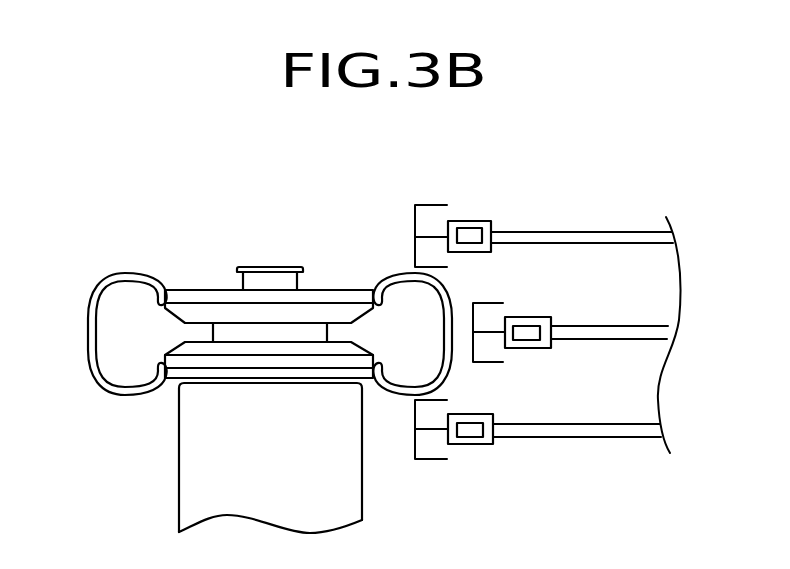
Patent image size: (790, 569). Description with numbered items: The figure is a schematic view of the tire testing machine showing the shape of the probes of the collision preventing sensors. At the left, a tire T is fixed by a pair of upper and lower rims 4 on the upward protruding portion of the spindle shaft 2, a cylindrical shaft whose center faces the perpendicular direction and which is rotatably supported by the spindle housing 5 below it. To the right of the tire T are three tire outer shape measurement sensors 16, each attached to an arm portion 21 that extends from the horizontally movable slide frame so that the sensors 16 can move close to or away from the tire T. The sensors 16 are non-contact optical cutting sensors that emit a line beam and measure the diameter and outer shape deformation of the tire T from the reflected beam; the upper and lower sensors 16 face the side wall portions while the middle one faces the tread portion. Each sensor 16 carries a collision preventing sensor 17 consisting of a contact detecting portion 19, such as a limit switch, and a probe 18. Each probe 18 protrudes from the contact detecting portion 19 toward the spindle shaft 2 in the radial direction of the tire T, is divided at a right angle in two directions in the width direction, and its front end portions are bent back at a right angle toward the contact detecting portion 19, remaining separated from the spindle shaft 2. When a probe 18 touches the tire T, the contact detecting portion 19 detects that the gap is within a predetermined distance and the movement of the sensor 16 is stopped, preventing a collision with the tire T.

The spindle shaft 2 is at (278, 227).
The tire T is at (127, 273).
The upper and lower rims 4 is at (206, 288).
The spindle housing 5 is at (178, 478).
The tire outer shape measurement sensor 16 is at (492, 223).
The collision preventing sensor 17 is at (503, 162).
The probe 18 is at (429, 203).
The contact detecting portion 19 is at (471, 229).
The arm portion 21 is at (633, 228).